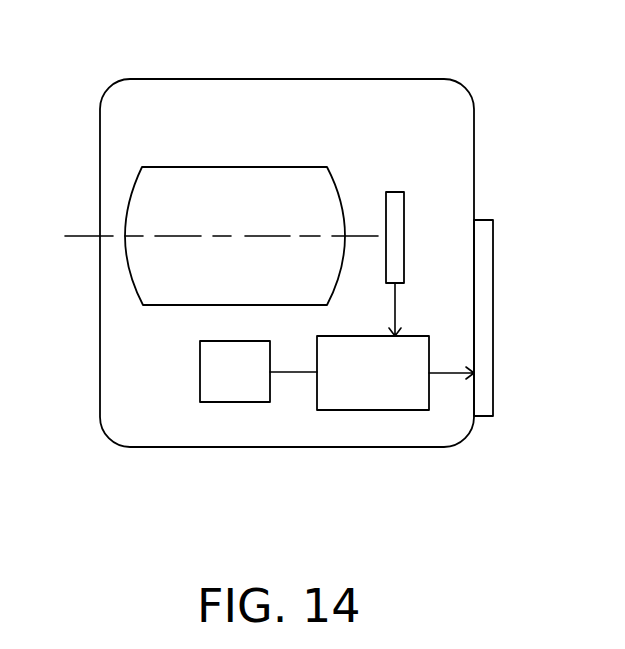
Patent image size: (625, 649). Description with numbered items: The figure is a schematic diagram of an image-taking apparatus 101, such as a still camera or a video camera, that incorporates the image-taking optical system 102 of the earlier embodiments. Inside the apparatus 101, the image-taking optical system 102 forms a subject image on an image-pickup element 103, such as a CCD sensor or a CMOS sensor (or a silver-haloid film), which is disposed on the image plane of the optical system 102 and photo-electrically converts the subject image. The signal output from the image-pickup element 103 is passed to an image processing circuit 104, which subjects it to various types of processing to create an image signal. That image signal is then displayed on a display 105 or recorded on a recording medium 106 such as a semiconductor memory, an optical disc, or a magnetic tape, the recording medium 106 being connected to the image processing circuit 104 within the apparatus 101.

The image-taking apparatus 101 is at (268, 79).
The image-taking optical system 102 is at (170, 167).
The image-pickup element 103 is at (397, 192).
The image processing circuit 104 is at (374, 410).
The display 105 is at (494, 314).
The recording medium 106 is at (235, 402).